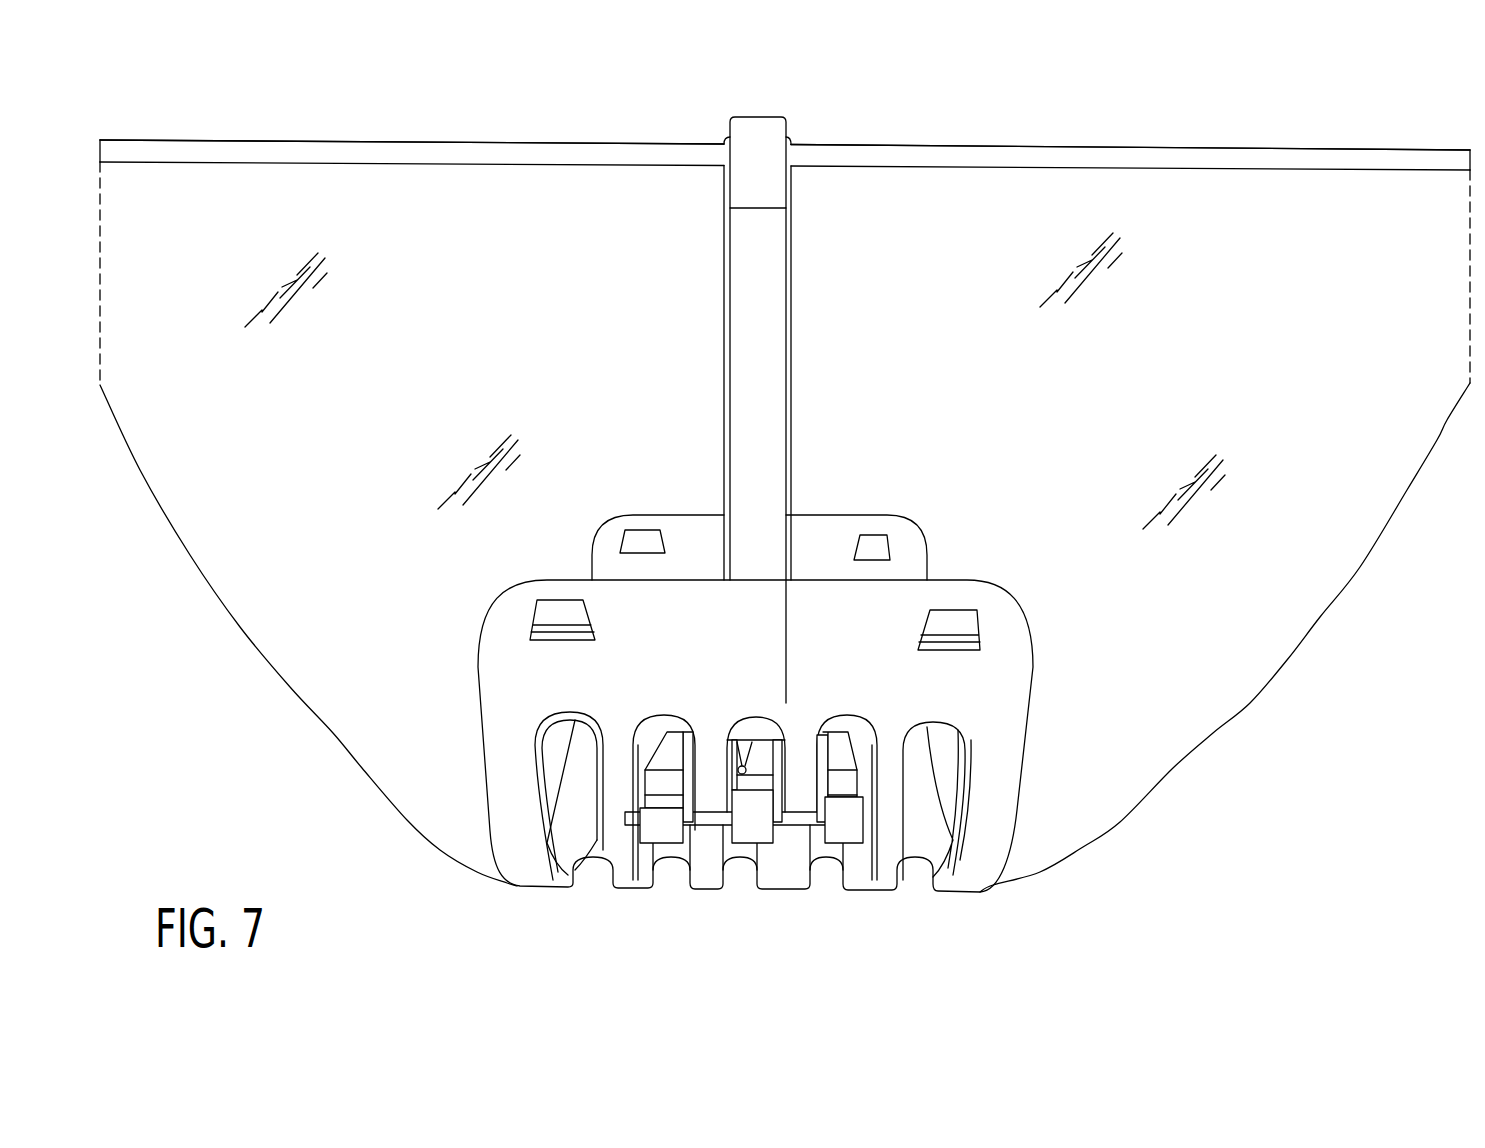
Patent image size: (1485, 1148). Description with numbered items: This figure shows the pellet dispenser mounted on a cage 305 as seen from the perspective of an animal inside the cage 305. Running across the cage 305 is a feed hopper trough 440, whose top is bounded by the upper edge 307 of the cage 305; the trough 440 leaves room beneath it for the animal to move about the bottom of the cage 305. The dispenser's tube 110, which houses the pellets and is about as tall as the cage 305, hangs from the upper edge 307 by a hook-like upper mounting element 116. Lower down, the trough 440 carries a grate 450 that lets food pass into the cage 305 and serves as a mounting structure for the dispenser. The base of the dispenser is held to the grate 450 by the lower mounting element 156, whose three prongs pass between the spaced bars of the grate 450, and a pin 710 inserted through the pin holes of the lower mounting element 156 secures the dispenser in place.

The cage 305 is at (1228, 130).
The feed hopper trough 440 is at (246, 141).
The upper edge 307 is at (895, 143).
The tube 110 is at (792, 445).
The upper mounting element 116 is at (773, 200).
The grate 450 is at (681, 604).
The pin 710 is at (810, 813).
The lower mounting element 156 is at (662, 825).